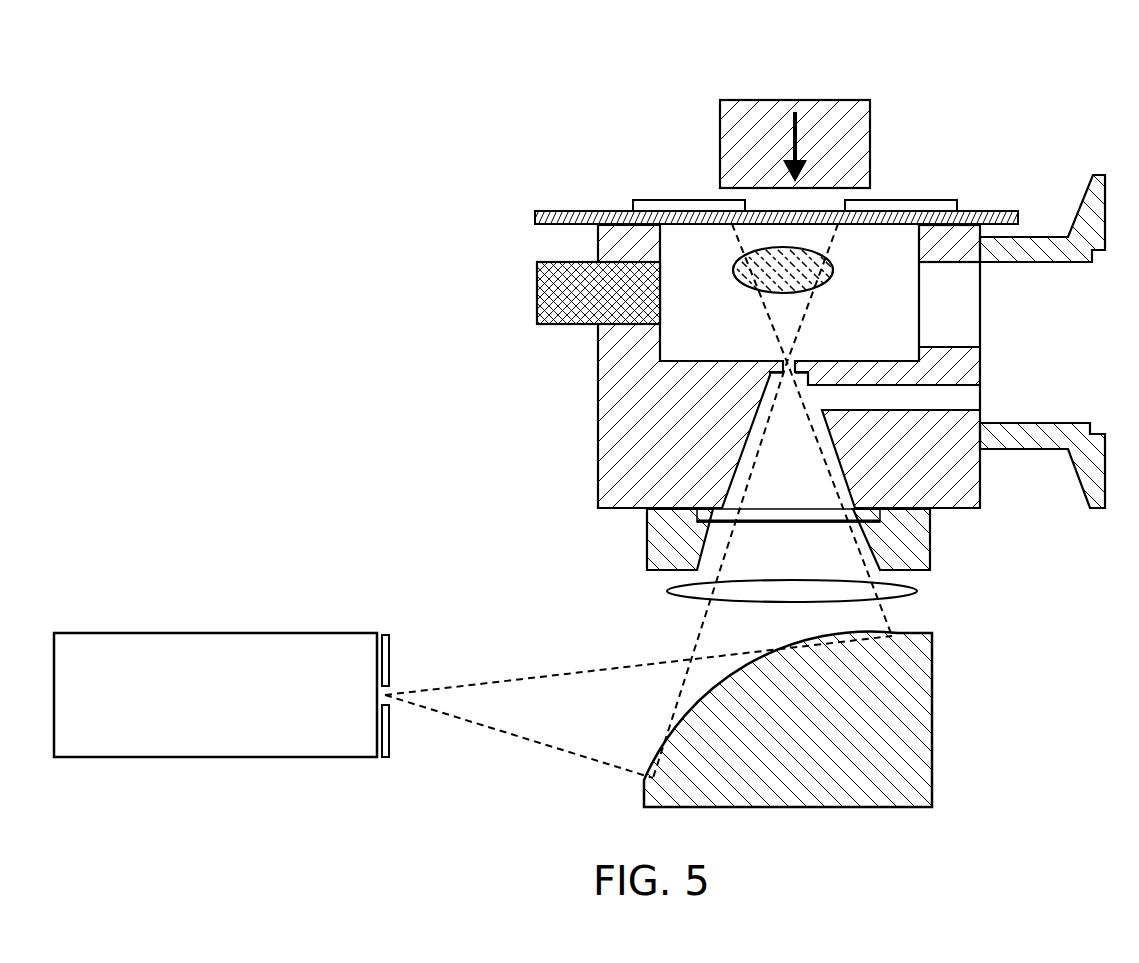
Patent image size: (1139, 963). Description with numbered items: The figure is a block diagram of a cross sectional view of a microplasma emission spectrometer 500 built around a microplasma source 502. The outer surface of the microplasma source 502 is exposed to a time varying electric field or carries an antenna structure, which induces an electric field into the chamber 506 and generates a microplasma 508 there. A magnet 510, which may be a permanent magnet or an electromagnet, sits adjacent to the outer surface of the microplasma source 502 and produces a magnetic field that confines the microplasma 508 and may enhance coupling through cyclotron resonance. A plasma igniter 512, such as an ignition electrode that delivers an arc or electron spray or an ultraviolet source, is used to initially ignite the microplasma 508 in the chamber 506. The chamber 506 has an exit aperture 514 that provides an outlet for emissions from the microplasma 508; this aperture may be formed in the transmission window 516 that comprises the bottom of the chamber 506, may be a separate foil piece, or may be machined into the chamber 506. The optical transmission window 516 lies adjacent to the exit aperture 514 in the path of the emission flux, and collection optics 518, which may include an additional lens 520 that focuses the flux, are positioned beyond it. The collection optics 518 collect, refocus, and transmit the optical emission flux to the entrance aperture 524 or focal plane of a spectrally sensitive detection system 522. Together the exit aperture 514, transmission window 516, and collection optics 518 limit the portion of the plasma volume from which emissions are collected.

The microplasma emission spectrometer 500 is at (966, 88).
The microplasma source 502 is at (985, 210).
The chamber 506 is at (713, 276).
The microplasma 508 is at (737, 283).
The magnet 510 is at (872, 150).
The plasma igniter 512 is at (533, 287).
The exit aperture 514 is at (800, 352).
The optical transmission window 516 is at (778, 525).
The collection optics 518 is at (790, 748).
The lens 520 is at (793, 603).
The spectrally sensitive detection system 522 is at (308, 757).
The entrance aperture 524 is at (398, 707).